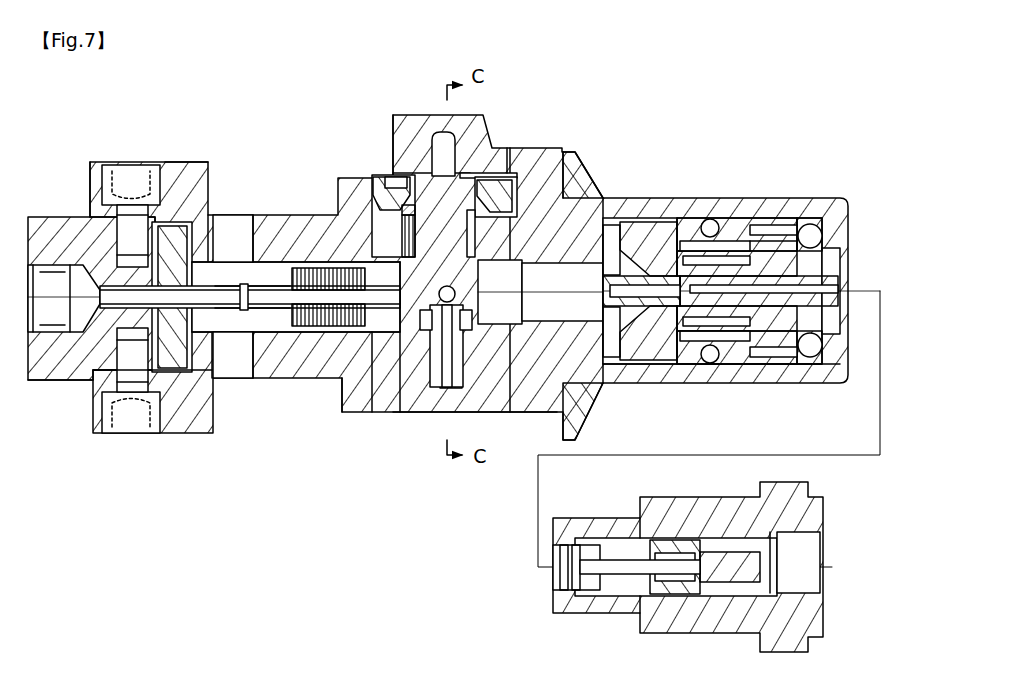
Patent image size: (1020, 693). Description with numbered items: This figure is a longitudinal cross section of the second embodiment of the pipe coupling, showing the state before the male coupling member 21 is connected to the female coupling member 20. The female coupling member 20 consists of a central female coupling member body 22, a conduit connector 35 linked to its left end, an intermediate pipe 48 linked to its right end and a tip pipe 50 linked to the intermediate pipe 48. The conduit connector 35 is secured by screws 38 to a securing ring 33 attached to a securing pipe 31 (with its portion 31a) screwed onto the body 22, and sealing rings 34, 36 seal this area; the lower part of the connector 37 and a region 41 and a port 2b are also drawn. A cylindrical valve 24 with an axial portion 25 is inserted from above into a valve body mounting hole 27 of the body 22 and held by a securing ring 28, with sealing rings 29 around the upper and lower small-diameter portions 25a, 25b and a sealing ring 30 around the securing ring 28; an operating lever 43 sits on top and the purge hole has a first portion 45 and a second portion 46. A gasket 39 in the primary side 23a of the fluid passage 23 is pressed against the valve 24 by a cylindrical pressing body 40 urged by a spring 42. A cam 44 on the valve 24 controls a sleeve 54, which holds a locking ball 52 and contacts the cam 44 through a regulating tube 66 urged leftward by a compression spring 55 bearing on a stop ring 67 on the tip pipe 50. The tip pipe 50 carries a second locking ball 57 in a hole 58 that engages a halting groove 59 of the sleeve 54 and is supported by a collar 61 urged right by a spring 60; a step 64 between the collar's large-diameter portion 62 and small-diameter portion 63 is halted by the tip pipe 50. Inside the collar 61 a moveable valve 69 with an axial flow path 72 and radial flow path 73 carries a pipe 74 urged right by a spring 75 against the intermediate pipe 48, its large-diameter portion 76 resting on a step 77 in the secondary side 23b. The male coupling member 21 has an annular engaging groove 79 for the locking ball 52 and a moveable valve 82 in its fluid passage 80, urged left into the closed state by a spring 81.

The female coupling member 20 is at (300, 208).
The male coupling member 21 is at (680, 497).
The female coupling member body 22 is at (322, 225).
The fluid passage 23 is at (250, 270).
The primary side of fluid passage 23a is at (245, 265).
The secondary side of fluid passage 23b is at (575, 235).
The valve 24 is at (432, 330).
The axial portion 25 is at (412, 330).
The upper small-diameter portion 25a is at (405, 170).
The lower small-diameter portion 25b is at (428, 330).
The valve body mounting hole 27 is at (455, 135).
The securing ring 28 is at (385, 200).
The sealing ring 29 is at (378, 212).
The sealing ring 30 is at (362, 230).
The securing pipe 31 is at (240, 322).
The securing pipe portion 31a is at (178, 420).
The securing ring 33 is at (172, 178).
The sealing ring 34 is at (183, 240).
The conduit connector 35 is at (100, 232).
The sealing ring 36 is at (185, 342).
The block bottom 37 is at (85, 380).
The screws 38 is at (122, 175).
The gasket 39 is at (385, 340).
The cylindrical pressing body 40 is at (325, 380).
The valve chamber 41 is at (408, 345).
The spring 42 is at (286, 272).
The operating lever 43 is at (418, 125).
The cam 44 is at (490, 163).
The first portion of purge hole 45 is at (470, 330).
The second portion of purge hole 46 is at (448, 340).
The intermediate pipe 48 is at (590, 392).
The tip pipe 50 is at (760, 213).
The locking ball 52 is at (830, 215).
The sleeve 54 is at (810, 240).
The compression spring 55 is at (630, 215).
The second locking ball 57 is at (735, 240).
The hole 58 is at (745, 235).
The halting groove 59 is at (725, 228).
The spring 60 is at (712, 250).
The collar 61 is at (770, 348).
The large-diameter portion 62 is at (710, 363).
The small-diameter portion 63 is at (748, 345).
The step 64 is at (725, 335).
The regulating tube 66 is at (612, 255).
The stop ring 67 is at (660, 245).
The moveable valve 69 is at (800, 270).
The axial flow path 72 is at (810, 287).
The radial flow path 73 is at (690, 345).
The pipe 74 is at (812, 358).
The spring 75 is at (800, 320).
The large-diameter portion 76 is at (630, 340).
The step 77 is at (680, 260).
The annular engaging groove 79 is at (588, 520).
The fluid passage 80 is at (805, 552).
The spring 81 is at (735, 590).
The moveable valve 82 is at (680, 590).
The port 2b is at (525, 292).